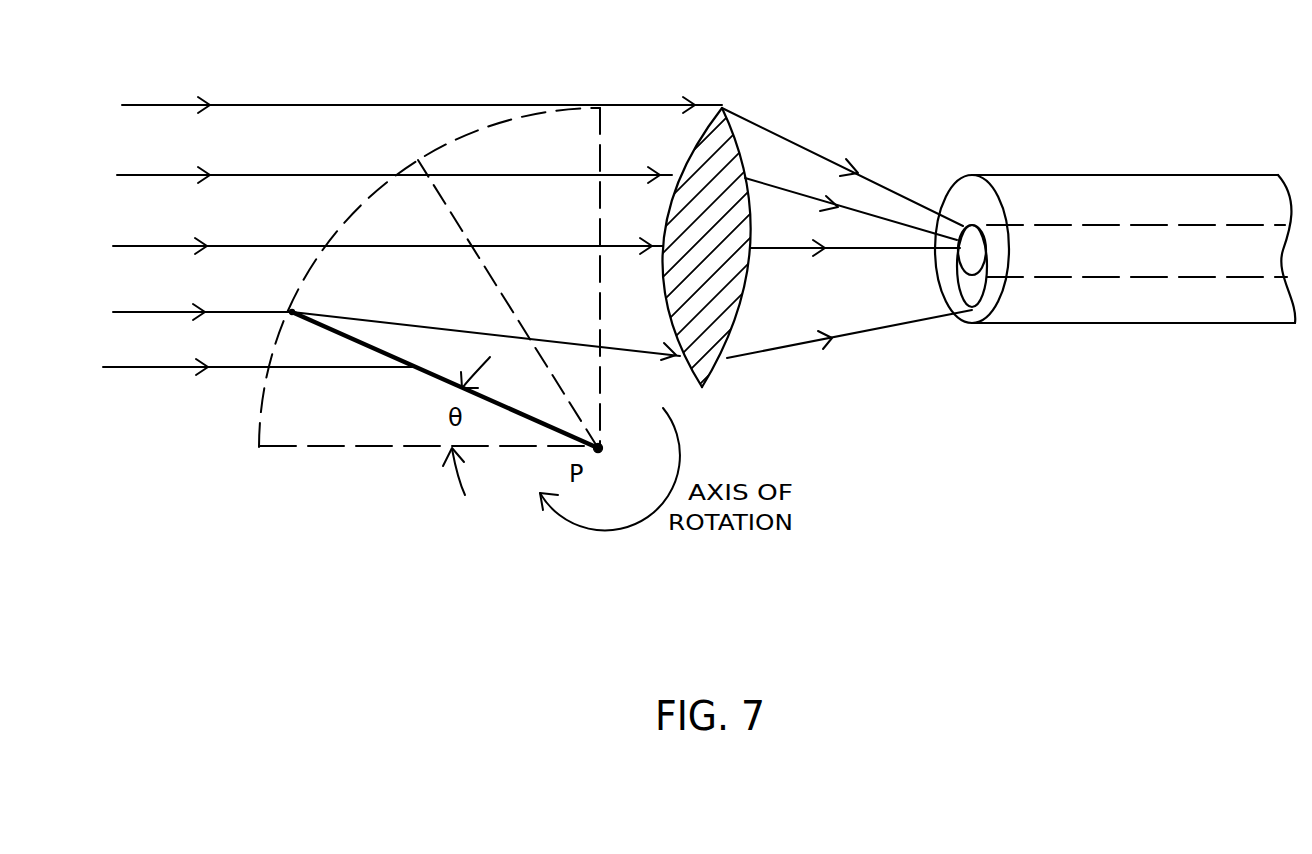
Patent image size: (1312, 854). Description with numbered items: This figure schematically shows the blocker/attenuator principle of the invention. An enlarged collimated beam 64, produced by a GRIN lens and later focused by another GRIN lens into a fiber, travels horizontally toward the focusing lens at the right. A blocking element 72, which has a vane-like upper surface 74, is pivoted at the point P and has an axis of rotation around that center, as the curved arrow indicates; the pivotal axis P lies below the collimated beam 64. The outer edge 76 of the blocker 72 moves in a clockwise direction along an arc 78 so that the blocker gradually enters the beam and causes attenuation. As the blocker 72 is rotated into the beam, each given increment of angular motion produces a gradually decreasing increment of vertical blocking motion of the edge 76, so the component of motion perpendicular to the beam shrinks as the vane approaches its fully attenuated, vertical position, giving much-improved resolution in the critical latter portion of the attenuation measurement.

The collimated beam 64 is at (165, 103).
The blocking element 72 is at (304, 341).
The vane-like upper surface 74 is at (361, 342).
The outer edge 76 is at (292, 311).
The arc 78 is at (467, 135).